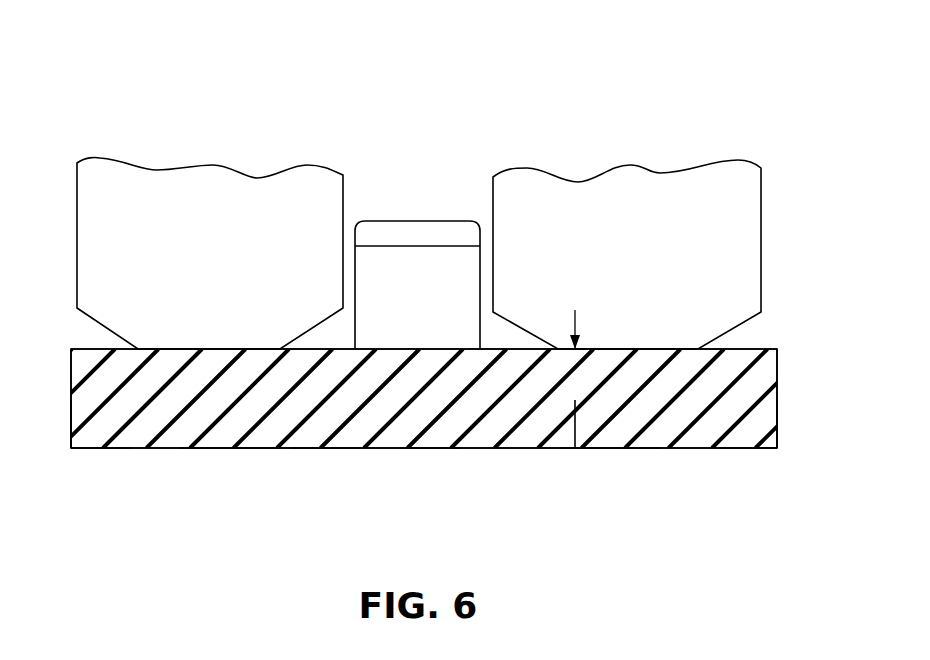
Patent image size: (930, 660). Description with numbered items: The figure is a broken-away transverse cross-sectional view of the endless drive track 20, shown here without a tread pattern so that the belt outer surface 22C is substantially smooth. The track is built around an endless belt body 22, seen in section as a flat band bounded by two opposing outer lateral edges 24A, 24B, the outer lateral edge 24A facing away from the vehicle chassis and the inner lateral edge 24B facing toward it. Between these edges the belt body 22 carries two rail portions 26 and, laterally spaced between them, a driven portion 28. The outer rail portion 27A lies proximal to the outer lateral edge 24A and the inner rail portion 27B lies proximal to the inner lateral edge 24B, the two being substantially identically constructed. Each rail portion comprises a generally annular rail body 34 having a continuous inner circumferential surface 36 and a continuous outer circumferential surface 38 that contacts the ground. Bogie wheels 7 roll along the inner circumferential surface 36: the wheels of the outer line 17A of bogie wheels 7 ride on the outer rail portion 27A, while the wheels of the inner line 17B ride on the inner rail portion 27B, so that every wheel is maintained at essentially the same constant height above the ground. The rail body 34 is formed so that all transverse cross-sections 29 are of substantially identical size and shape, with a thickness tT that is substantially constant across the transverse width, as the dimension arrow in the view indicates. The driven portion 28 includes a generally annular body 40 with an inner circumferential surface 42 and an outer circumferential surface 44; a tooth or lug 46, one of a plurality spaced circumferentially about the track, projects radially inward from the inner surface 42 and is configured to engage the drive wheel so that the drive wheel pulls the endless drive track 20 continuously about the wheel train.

The bogie wheel 7 is at (414, 215).
The outer line of bogie wheels 17A is at (146, 145).
The inner line of bogie wheels 17B is at (593, 162).
The endless drive track 20 is at (598, 528).
The belt body 22 is at (288, 488).
The belt outer surface 22C is at (324, 449).
The outer lateral edge 24A is at (71, 380).
The inner lateral edge 24B is at (777, 402).
The rail portion 26 is at (182, 462).
The outer rail portion 27A is at (121, 448).
The inner rail portion 27B is at (735, 449).
The driven portion 28 is at (407, 415).
The transverse cross-section 29 is at (105, 427).
The rail body 34 is at (124, 395).
The inner circumferential surface 36 is at (183, 349).
The outer circumferential surface 38 is at (226, 449).
The driven portion body 40 is at (427, 407).
The driven portion inner circumferential surface 42 is at (395, 349).
The driven portion outer circumferential surface 44 is at (425, 449).
The tooth or lug 46 is at (400, 232).
The thickness tT is at (575, 449).